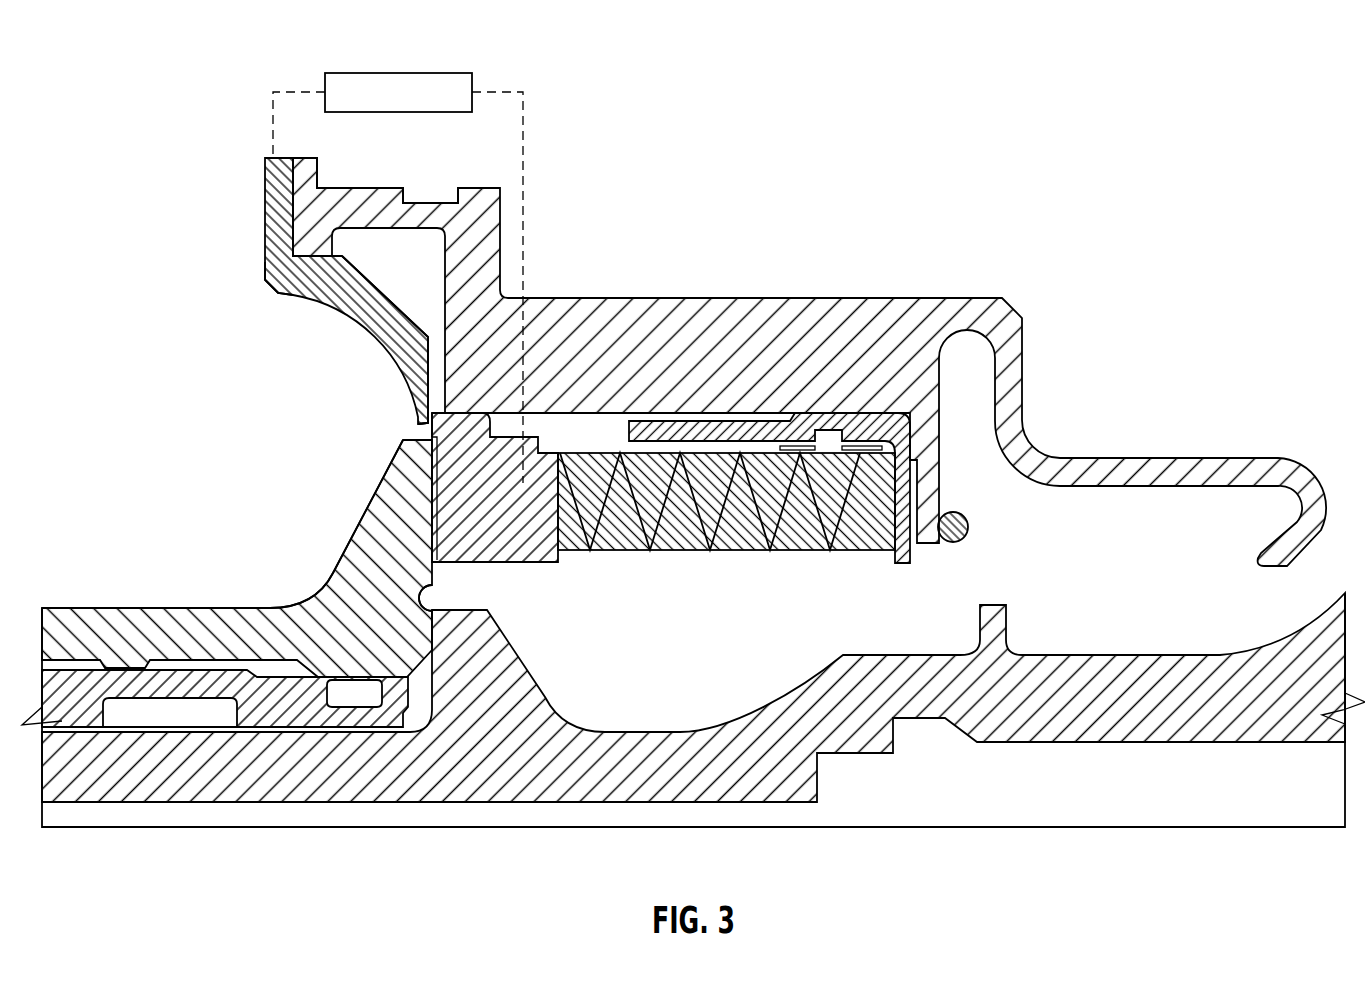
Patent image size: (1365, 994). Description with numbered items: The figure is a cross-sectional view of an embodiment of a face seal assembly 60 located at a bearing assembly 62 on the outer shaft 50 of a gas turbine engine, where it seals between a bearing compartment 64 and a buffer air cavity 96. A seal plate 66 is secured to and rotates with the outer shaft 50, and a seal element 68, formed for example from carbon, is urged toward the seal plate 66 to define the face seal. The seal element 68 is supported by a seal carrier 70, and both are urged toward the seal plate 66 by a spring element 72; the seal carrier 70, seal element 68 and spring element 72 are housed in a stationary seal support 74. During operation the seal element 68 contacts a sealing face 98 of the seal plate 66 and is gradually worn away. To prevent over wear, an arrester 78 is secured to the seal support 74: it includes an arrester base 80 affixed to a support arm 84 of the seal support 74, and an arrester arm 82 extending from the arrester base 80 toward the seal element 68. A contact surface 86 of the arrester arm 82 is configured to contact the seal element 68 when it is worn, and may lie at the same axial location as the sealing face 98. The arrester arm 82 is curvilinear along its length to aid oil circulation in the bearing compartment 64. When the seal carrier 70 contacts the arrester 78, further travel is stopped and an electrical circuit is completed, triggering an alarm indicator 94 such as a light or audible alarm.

The outer shaft 50 is at (325, 790).
The face seal assembly 60 is at (923, 166).
The bearing assembly 62 is at (63, 672).
The bearing compartment 64 is at (180, 486).
The seal plate 66 is at (328, 603).
The seal element 68 is at (437, 543).
The seal carrier 70 is at (538, 440).
The spring element 72 is at (742, 549).
The seal support 74 is at (870, 317).
The arrester 78 is at (273, 282).
The arrester base 80 is at (278, 204).
The arrester arm 82 is at (383, 325).
The support arm 84 is at (382, 203).
The contact surface 86 is at (430, 431).
The alarm indicator 94 is at (383, 72).
The buffer air cavity 96 is at (1139, 579).
The sealing face 98 is at (434, 545).